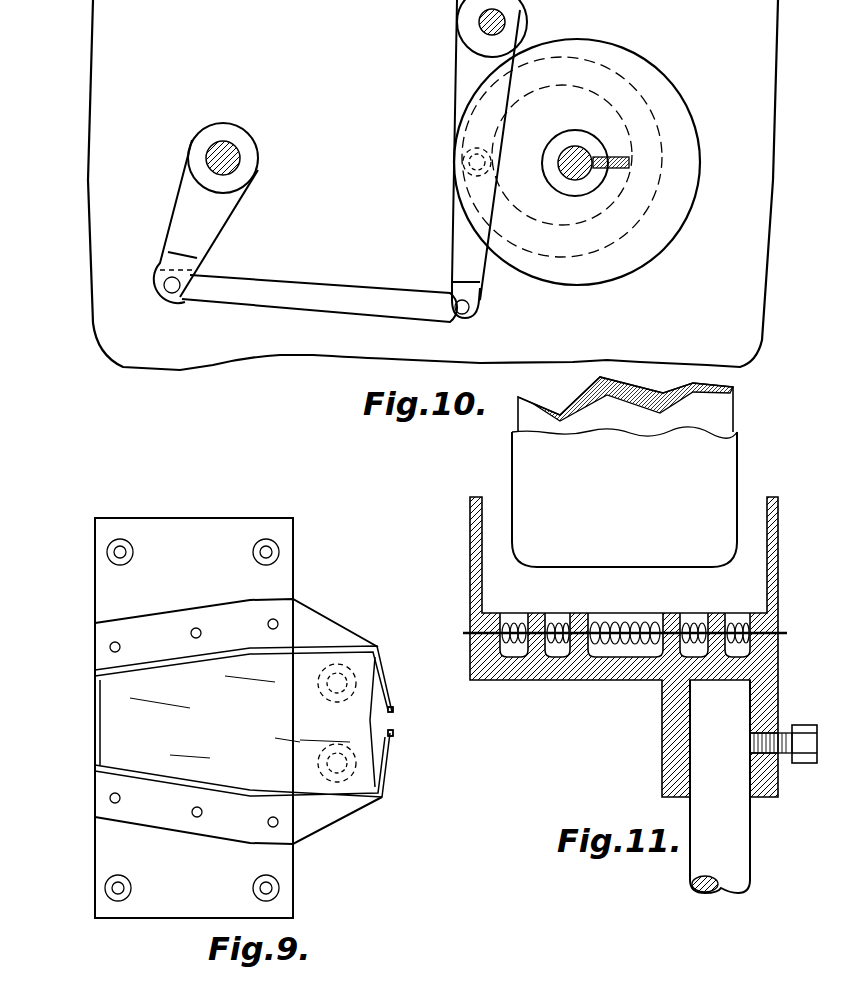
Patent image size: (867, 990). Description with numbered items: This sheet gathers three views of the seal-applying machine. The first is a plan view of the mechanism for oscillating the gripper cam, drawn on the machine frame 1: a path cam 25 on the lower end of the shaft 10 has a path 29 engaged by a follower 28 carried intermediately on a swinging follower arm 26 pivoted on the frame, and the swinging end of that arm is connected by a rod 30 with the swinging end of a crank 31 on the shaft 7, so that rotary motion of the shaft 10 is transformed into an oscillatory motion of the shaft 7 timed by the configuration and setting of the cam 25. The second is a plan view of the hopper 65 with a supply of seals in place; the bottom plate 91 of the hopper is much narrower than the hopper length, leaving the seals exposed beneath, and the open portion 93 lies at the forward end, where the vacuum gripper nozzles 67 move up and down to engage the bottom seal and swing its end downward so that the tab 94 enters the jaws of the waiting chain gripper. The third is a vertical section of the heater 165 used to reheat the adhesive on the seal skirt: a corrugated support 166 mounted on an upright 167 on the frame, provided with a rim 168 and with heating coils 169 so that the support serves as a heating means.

In FIG. 10, the frame plate 1 is at (433, 185).
In FIG. 10, the shaft 7 is at (235, 154).
In FIG. 10, the shaft 10 is at (586, 152).
In FIG. 10, the path cam 25 is at (660, 85).
In FIG. 10, the swinging follower arm 26 is at (458, 84).
In FIG. 10, the follower 28 is at (470, 152).
In FIG. 10, the path 29 is at (597, 54).
In FIG. 10, the rod 30 is at (280, 294).
In FIG. 10, the crank 31 is at (212, 218).
In FIG. 9, the hopper 65 is at (95, 678).
In FIG. 9, the vacuum gripper nozzles 67 is at (357, 748).
In FIG. 9, the bottom plate 91 is at (194, 718).
In FIG. 9, the open portion 93 is at (235, 722).
In FIG. 9, the tab 94 is at (387, 722).
In FIG. 11, the heater 165 is at (777, 632).
In FIG. 11, the corrugated support 166 is at (478, 650).
In FIG. 11, the upright 167 is at (705, 757).
In FIG. 11, the rim 168 is at (778, 560).
In FIG. 11, the heating coils 169 is at (615, 628).